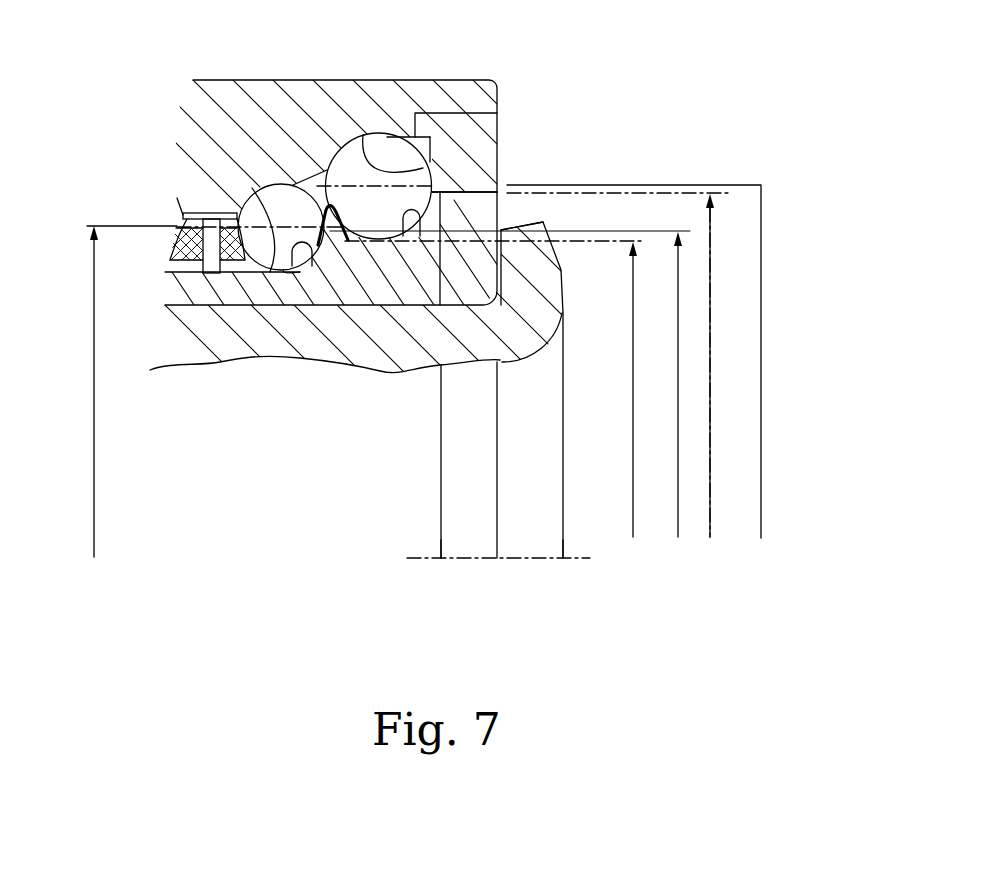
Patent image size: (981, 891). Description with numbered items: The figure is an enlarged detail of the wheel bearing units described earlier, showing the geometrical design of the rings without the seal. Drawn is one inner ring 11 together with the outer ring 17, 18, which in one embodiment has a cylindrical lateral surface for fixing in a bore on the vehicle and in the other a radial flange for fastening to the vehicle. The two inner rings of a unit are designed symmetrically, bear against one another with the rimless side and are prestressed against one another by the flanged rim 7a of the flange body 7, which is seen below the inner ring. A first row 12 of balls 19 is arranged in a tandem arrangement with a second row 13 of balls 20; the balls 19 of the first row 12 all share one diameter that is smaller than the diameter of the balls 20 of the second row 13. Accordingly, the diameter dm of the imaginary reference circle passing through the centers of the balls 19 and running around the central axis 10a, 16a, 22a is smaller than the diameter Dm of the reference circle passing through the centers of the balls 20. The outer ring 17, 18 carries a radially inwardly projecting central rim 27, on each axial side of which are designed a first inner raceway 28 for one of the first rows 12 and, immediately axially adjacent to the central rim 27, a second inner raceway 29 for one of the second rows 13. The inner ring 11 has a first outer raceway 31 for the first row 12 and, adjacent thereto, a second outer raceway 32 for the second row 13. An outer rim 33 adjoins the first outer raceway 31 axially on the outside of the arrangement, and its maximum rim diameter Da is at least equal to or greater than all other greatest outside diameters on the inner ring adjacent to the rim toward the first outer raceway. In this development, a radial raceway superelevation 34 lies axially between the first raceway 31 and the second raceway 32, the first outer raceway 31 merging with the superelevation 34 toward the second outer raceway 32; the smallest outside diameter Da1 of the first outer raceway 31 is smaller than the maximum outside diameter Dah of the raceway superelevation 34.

The flange body 7 is at (215, 340).
The flanged rim 7a is at (540, 262).
The central axis 10a is at (523, 563).
The central axis 16a is at (547, 594).
The central axis 22a is at (547, 594).
The inner ring 11 is at (537, 343).
The first row 12 is at (273, 203).
The second row 13 is at (385, 140).
The outer ring 17 is at (325, 92).
The outer ring 18 is at (325, 92).
The balls 19 is at (273, 203).
The balls 20 is at (385, 140).
The central rim 27 is at (208, 205).
The first inner raceway 28 is at (268, 273).
The second inner raceway 29 is at (498, 133).
The first outer raceway 31 is at (297, 268).
The second outer raceway 32 is at (436, 300).
The outer rim 33 is at (473, 210).
The raceway superelevation 34 is at (335, 225).
The diameter of the reference circle of the first rows dm is at (94, 374).
The smallest outside diameter of the first outer raceway Da1 is at (633, 290).
The maximum outside diameter of the raceway superelevation Dah is at (680, 352).
The maximum rim diameter Da is at (710, 417).
The diameter of the reference circle of the second rows Dm is at (761, 495).